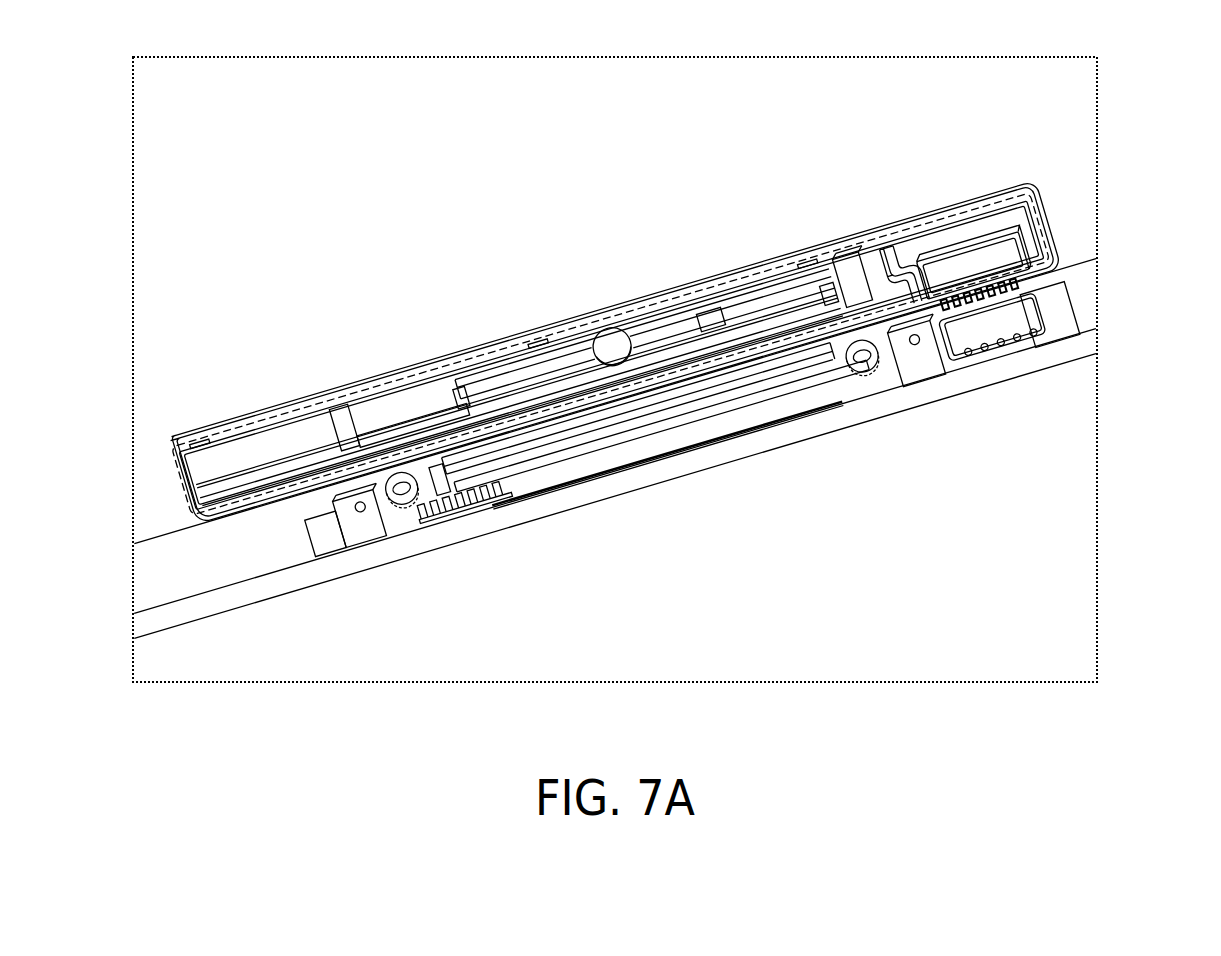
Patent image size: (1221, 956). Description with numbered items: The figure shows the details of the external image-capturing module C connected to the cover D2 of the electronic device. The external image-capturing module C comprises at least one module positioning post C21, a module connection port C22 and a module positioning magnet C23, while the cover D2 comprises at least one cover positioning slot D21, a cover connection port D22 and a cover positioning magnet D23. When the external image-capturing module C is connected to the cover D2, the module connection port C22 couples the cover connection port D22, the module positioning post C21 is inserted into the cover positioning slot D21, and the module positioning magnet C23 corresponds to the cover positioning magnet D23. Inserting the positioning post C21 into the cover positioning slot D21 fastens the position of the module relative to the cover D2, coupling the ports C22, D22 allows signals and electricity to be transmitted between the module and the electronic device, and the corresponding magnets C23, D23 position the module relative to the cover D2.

The external image-capturing module C is at (1047, 215).
The module positioning post C21 is at (397, 512).
The module connection port C22 is at (963, 265).
The module positioning magnet C23 is at (685, 355).
The cover D2 is at (1085, 276).
The cover positioning slot D21 is at (470, 508).
The cover connection port D22 is at (1012, 316).
The cover positioning magnet D23 is at (650, 424).